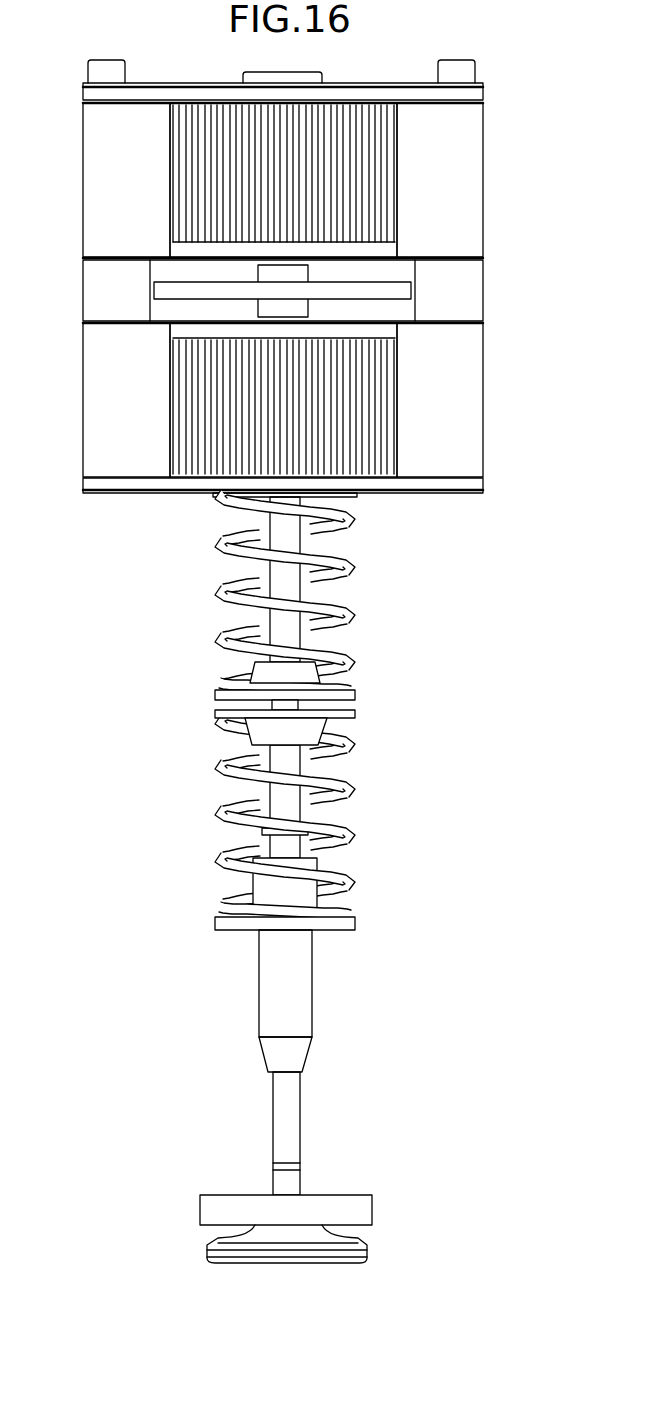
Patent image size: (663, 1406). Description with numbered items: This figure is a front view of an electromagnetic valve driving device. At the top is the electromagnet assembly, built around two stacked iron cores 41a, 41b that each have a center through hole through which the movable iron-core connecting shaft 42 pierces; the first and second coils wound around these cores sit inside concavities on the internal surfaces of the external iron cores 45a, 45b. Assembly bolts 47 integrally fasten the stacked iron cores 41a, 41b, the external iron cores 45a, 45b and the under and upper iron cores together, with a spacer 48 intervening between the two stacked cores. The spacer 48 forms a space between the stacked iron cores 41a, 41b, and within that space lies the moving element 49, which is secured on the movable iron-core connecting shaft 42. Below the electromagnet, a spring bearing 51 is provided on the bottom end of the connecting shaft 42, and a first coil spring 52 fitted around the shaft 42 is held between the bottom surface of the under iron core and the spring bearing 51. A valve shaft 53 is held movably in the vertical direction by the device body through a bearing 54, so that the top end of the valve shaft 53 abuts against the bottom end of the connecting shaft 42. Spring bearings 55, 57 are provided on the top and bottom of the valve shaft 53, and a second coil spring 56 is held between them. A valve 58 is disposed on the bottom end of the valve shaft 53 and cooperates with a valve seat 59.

The stacked iron core 41a is at (378, 405).
The stacked iron core 41b is at (378, 174).
The movable iron-core connecting shaft 42 is at (290, 590).
The external iron core 45a is at (473, 360).
The external iron core 45b is at (473, 132).
The assembly bolt 47 is at (88, 72).
The spacer 48 is at (472, 273).
The moving element 49 is at (402, 290).
The spring bearing 51 is at (355, 695).
The first coil spring 52 is at (345, 527).
The valve shaft 53 is at (300, 1120).
The bearing 54 is at (300, 975).
The spring bearing 55 is at (355, 714).
The second coil spring 56 is at (345, 789).
The spring bearing 57 is at (355, 922).
The valve 58 is at (310, 1262).
The valve seat 59 is at (372, 1210).